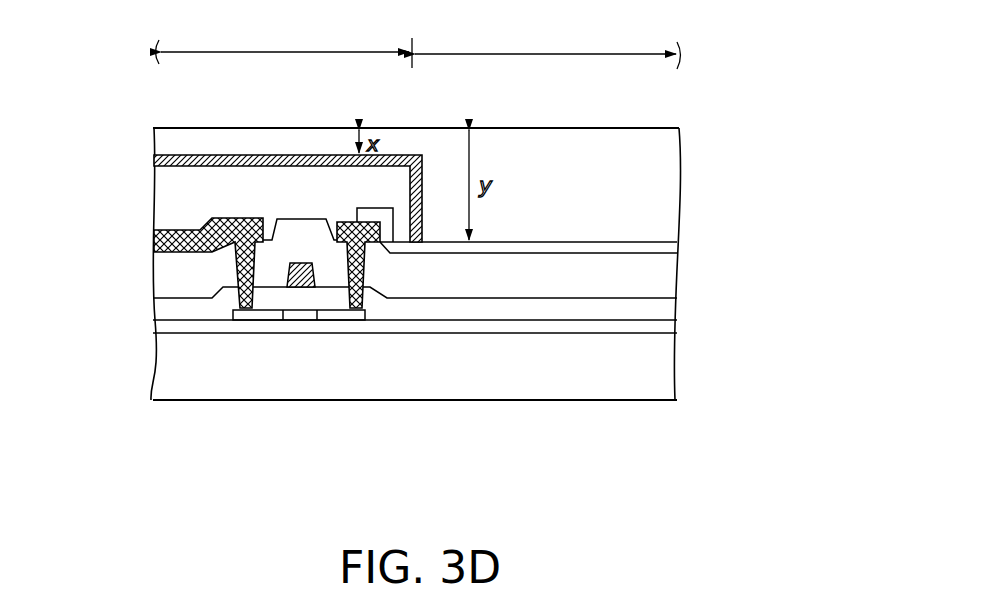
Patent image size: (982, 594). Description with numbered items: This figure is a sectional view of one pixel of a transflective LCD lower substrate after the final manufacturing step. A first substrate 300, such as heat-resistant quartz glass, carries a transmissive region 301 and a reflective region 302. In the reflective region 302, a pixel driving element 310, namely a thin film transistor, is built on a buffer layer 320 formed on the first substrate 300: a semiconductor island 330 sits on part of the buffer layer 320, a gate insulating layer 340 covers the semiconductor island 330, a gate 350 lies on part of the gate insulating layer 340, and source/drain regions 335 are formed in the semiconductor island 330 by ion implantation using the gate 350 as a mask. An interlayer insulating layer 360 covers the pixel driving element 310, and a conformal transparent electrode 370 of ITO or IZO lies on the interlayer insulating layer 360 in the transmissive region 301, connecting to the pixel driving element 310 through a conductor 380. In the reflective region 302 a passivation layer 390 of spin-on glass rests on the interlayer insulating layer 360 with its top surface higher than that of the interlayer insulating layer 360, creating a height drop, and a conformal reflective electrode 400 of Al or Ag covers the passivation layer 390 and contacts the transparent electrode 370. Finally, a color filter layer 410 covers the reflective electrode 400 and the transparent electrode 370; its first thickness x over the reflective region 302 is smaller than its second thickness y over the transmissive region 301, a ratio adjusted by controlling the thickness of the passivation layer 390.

The first substrate 300 is at (648, 377).
The transmissive region 301 is at (548, 43).
The reflective region 302 is at (284, 42).
The pixel driving element 310 is at (300, 321).
The buffer layer 320 is at (650, 334).
The semiconductor island 330 is at (236, 311).
The source/drain regions 335 is at (256, 319).
The gate insulating layer 340 is at (648, 310).
The gate 350 is at (303, 290).
The interlayer insulating layer 360 is at (650, 280).
The transparent electrode 370 is at (650, 250).
The conductor 380 is at (363, 268).
The passivation layer 390 is at (182, 200).
The reflective electrode 400 is at (155, 159).
The color filter layer 410 is at (650, 176).